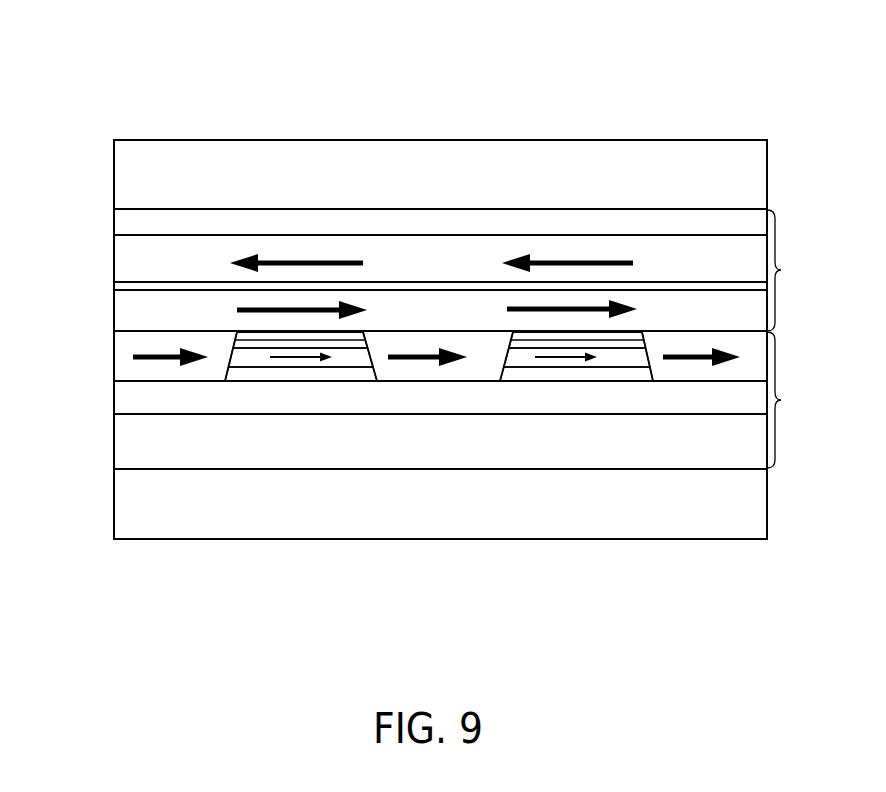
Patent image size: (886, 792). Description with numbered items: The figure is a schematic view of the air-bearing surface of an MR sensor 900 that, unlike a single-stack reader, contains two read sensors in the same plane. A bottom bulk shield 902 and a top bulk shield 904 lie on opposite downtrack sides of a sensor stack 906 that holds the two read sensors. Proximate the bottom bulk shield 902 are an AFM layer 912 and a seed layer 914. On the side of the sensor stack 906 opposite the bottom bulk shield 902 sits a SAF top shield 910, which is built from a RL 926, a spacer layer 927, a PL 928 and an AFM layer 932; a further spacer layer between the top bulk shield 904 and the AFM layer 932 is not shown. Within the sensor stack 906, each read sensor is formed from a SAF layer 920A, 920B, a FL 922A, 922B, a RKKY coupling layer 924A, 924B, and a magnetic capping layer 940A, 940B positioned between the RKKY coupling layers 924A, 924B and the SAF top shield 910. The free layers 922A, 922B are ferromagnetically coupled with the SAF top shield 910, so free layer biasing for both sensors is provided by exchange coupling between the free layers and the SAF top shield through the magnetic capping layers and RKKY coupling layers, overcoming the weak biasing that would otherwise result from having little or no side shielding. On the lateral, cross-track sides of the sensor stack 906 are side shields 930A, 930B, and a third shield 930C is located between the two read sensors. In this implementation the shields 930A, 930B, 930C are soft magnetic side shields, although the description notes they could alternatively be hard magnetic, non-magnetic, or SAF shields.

The MR sensor 900 is at (116, 67).
The bottom bulk shield 902 is at (114, 503).
The top bulk shield 904 is at (114, 164).
The sensor stack 906 is at (467, 400).
The SAF top shield 910 is at (467, 270).
The AFM layer 912 is at (114, 394).
The seed layer 914 is at (114, 452).
The RL 926 is at (114, 317).
The spacer layer 927 is at (114, 284).
The PL 928 is at (114, 258).
The AFM layer 932 is at (114, 212).
The side shield 930A is at (114, 357).
The side shield 930B is at (730, 331).
The third shield 930C is at (440, 382).
The magnetic capping layer 940A is at (274, 482).
The magnetic capping layer 940B is at (558, 483).
The SAF layer 920A is at (257, 382).
The SAF layer 920B is at (550, 382).
The FL 922A is at (316, 367).
The FL 922B is at (598, 367).
The RKKY coupling layer 924A is at (364, 335).
The RKKY coupling layer 924B is at (640, 337).